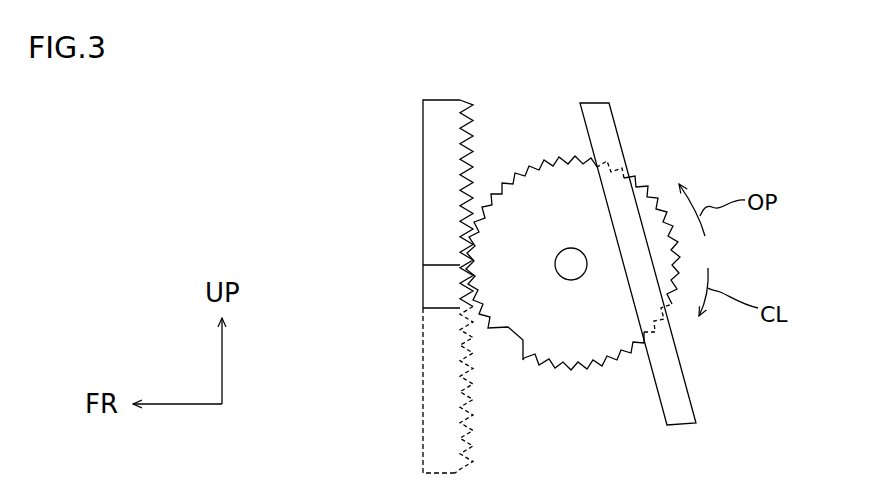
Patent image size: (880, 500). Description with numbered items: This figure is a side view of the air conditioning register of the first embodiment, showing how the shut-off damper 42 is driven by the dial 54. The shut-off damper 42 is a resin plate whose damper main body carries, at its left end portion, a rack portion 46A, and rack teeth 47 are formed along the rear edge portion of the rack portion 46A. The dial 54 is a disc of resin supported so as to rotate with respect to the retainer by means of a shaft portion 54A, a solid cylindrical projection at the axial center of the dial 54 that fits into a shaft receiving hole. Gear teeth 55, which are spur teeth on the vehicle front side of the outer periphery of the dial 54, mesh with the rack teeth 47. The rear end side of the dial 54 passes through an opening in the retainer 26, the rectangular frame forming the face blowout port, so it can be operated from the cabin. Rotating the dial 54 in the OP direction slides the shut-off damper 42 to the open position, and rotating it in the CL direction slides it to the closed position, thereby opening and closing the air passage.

The shut-off damper 42 is at (421, 216).
The rack portion 46A is at (423, 173).
The rack teeth 47 is at (478, 150).
The dial 54 is at (599, 373).
The shaft portion 54A is at (569, 248).
The gear teeth 55 is at (530, 165).
The retainer 26 is at (686, 382).